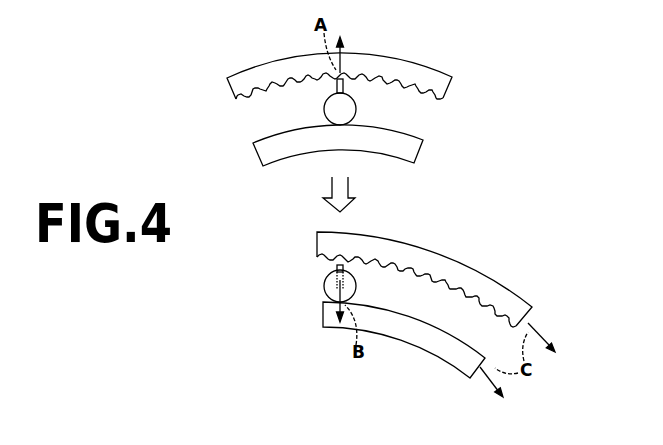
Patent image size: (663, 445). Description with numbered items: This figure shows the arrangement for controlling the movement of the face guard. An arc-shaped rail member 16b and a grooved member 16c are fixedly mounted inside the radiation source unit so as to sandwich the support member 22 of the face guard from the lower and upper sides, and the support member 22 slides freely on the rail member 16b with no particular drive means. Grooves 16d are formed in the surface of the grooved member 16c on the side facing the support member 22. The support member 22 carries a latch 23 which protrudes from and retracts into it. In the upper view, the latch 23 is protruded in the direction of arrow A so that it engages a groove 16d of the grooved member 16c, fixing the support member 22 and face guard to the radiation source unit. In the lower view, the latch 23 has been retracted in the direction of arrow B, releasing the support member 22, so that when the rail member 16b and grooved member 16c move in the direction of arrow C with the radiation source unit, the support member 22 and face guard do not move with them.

The grooved member 16c is at (435, 70).
The grooves 16d is at (430, 102).
The rail member 16b is at (421, 154).
The support member 22 is at (325, 112).
The latch 23 is at (336, 87).